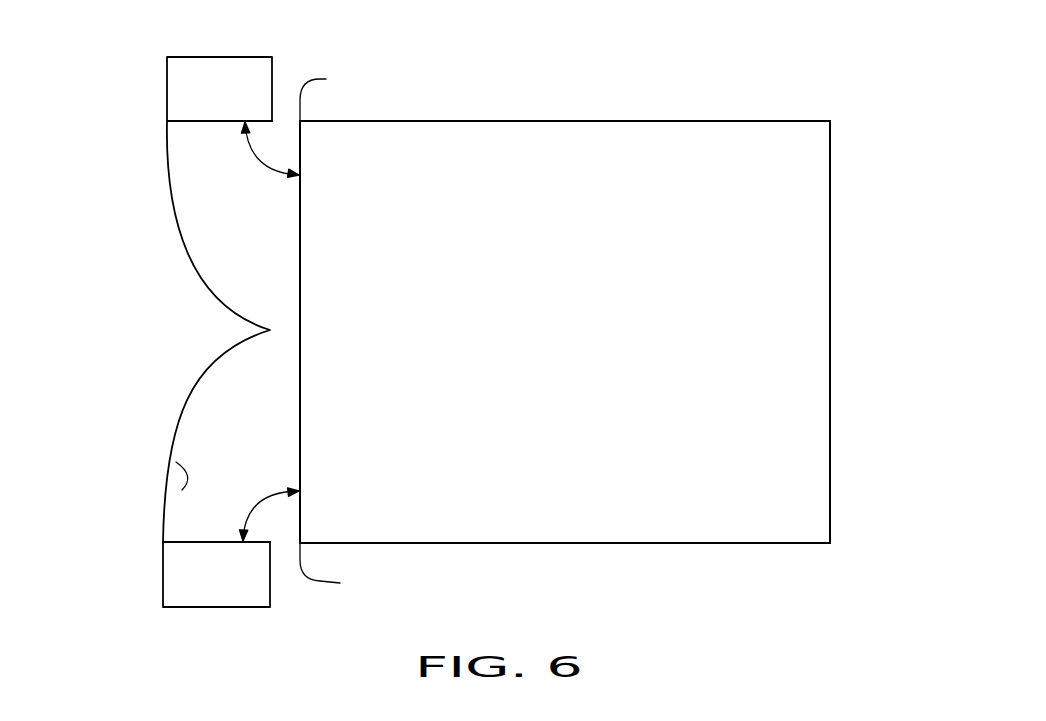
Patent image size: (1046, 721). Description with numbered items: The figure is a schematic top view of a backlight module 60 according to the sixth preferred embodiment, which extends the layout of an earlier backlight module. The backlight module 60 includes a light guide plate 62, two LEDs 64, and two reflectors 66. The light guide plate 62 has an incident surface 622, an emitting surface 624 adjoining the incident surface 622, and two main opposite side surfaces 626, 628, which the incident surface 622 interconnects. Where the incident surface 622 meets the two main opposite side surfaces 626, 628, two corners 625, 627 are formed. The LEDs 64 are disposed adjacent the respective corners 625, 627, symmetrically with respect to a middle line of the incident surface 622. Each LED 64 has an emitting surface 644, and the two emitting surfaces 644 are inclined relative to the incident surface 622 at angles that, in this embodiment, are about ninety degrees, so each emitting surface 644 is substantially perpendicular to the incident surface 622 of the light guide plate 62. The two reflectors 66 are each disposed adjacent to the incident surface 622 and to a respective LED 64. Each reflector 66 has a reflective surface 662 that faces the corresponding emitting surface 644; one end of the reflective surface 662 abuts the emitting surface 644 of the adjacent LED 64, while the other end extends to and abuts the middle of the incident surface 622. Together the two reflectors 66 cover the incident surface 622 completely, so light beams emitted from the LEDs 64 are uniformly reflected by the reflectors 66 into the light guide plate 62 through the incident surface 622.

The backlight module 60 is at (522, 37).
The light guide plate 62 is at (818, 107).
The incident surface 622 is at (298, 201).
The emitting surface 624 is at (773, 402).
The corner 625 is at (355, 570).
The main side surface 626 is at (665, 545).
The corner 627 is at (345, 91).
The main side surface 628 is at (618, 120).
The LED 64 is at (187, 80).
The emitting surface 644 is at (195, 121).
The reflector 66 is at (174, 240).
The reflective surface 662 is at (183, 489).